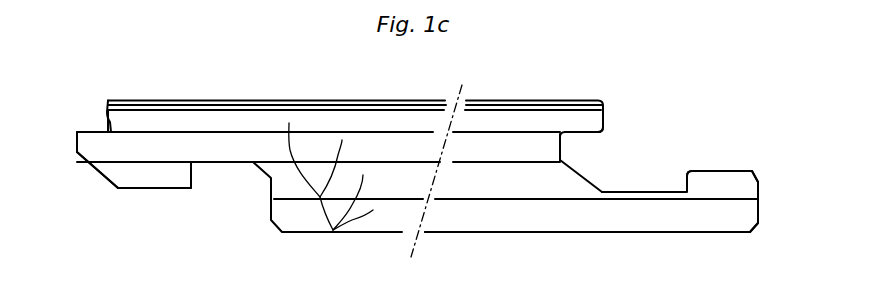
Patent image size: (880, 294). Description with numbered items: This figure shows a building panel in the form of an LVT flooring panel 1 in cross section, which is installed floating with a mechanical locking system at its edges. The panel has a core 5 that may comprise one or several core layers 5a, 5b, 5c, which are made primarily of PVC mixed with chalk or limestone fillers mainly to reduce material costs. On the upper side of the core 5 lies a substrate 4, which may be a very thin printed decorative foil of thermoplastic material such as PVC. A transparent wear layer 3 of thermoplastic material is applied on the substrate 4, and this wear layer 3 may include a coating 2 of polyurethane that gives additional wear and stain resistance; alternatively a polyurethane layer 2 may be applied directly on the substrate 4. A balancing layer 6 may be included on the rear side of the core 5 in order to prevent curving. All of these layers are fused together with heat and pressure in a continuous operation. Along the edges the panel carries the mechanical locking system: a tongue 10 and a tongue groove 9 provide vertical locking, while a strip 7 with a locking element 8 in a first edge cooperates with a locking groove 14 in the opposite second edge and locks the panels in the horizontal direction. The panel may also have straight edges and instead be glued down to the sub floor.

The LVT flooring panel 1 is at (321, 90).
The coating of polyurethane 2 is at (563, 100).
The transparent wear layer 3 is at (605, 103).
The substrate 4 is at (103, 106).
The core 5 is at (333, 232).
The core layer 5a is at (605, 118).
The core layer 5b is at (552, 146).
The core layer 5c is at (107, 172).
The balancing layer 6 is at (512, 232).
The strip 7 is at (662, 212).
The locking element 8 is at (730, 178).
The tongue groove 9 is at (587, 175).
The tongue 10 is at (78, 150).
The locking groove 14 is at (218, 165).